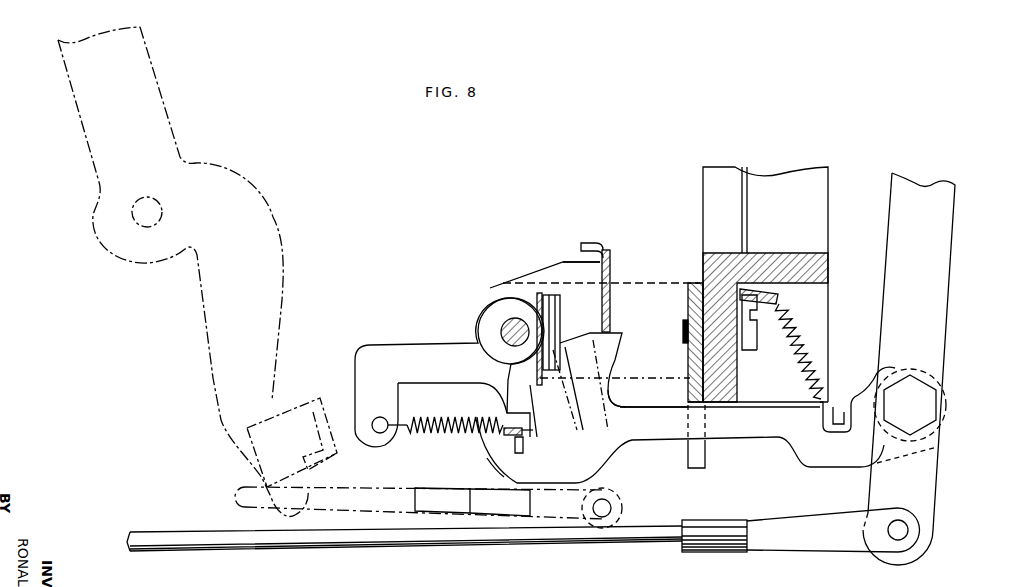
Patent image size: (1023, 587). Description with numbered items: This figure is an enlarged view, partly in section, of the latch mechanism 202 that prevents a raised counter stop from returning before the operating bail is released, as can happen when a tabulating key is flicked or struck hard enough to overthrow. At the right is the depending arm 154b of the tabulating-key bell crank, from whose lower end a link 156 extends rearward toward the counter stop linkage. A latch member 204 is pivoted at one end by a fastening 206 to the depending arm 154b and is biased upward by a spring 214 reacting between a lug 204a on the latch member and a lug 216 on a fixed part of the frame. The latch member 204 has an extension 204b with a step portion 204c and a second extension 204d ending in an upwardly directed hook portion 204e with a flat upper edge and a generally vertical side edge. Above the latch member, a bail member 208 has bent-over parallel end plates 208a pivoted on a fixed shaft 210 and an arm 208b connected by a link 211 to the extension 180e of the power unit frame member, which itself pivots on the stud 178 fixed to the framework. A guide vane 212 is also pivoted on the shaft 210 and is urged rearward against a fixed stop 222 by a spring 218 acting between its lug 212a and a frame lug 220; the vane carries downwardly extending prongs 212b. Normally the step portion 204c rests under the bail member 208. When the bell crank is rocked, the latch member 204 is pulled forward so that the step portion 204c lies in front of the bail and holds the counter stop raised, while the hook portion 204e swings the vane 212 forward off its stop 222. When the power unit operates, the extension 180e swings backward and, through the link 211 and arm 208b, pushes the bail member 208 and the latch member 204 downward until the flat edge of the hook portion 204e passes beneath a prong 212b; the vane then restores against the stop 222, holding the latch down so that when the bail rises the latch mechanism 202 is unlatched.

The depending arm 154b is at (947, 263).
The link 156 is at (313, 542).
The stud 178 is at (140, 222).
The extension of frame member 180e is at (207, 289).
The latch mechanism 202 is at (457, 518).
The latch member 204 is at (735, 437).
The lug 204a is at (847, 423).
The extension 204b is at (607, 393).
The step portion 204c is at (603, 340).
The second extension 204d is at (498, 469).
The hook portion 204e is at (492, 437).
The fastening 206 is at (941, 438).
The bail member 208 is at (612, 260).
The end plates 208a is at (568, 265).
The arm 208b is at (620, 477).
The fixed shaft 210 is at (512, 320).
The link 211 is at (336, 517).
The guide vane 212 is at (544, 375).
The lug 212a is at (527, 431).
The prongs 212b is at (522, 447).
The spring 214 is at (800, 331).
The lug 216 is at (775, 290).
The spring 218 is at (430, 436).
The lug 220 is at (338, 395).
The fixed stop 222 is at (470, 340).